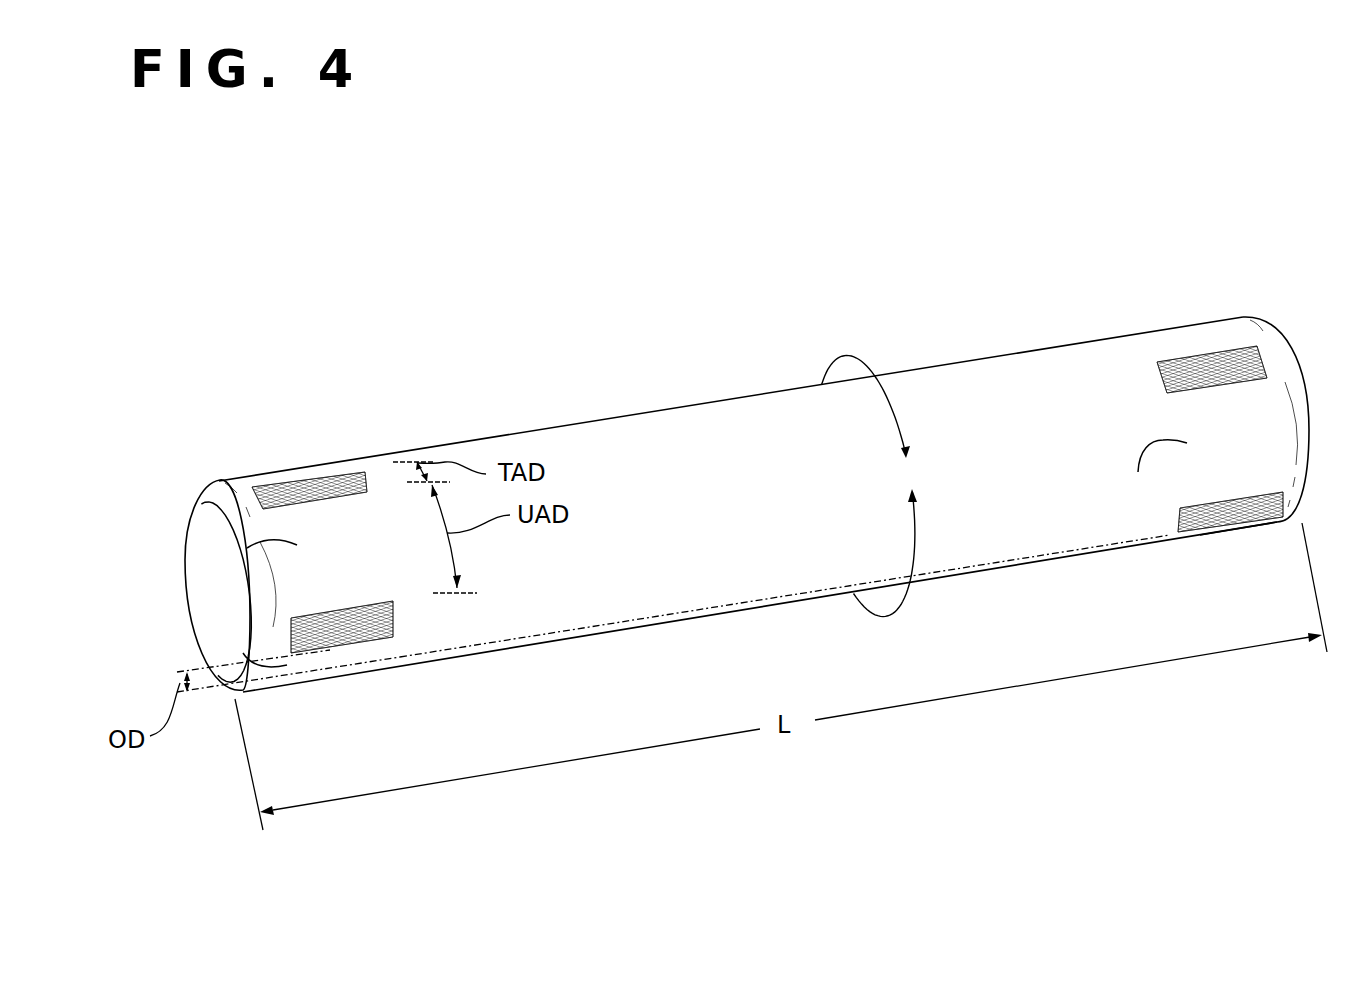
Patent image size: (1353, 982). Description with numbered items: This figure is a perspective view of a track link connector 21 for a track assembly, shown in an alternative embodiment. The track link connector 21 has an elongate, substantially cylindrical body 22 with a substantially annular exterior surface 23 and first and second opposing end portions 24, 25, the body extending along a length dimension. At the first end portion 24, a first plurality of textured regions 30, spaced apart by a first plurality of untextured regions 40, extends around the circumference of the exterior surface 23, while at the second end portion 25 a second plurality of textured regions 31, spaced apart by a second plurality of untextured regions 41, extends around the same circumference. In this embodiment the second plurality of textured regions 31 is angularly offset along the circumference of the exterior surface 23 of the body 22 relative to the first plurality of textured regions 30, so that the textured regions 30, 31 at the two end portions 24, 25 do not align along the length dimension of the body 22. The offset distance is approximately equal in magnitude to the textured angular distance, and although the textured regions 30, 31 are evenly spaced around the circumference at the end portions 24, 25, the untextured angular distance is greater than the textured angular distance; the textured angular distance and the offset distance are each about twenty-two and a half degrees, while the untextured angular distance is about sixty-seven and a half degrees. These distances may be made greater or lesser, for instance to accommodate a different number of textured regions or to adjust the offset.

The track link connector 21 is at (741, 334).
The body 22 is at (527, 634).
The exterior surface 23 is at (813, 504).
The first end portion 24 is at (348, 663).
The second end portion 25 is at (1240, 524).
The first plurality of textured regions 30 is at (353, 617).
The second plurality of textured regions 31 is at (1260, 507).
The first plurality of untextured regions 40 is at (247, 548).
The second plurality of untextured regions 41 is at (1138, 472).